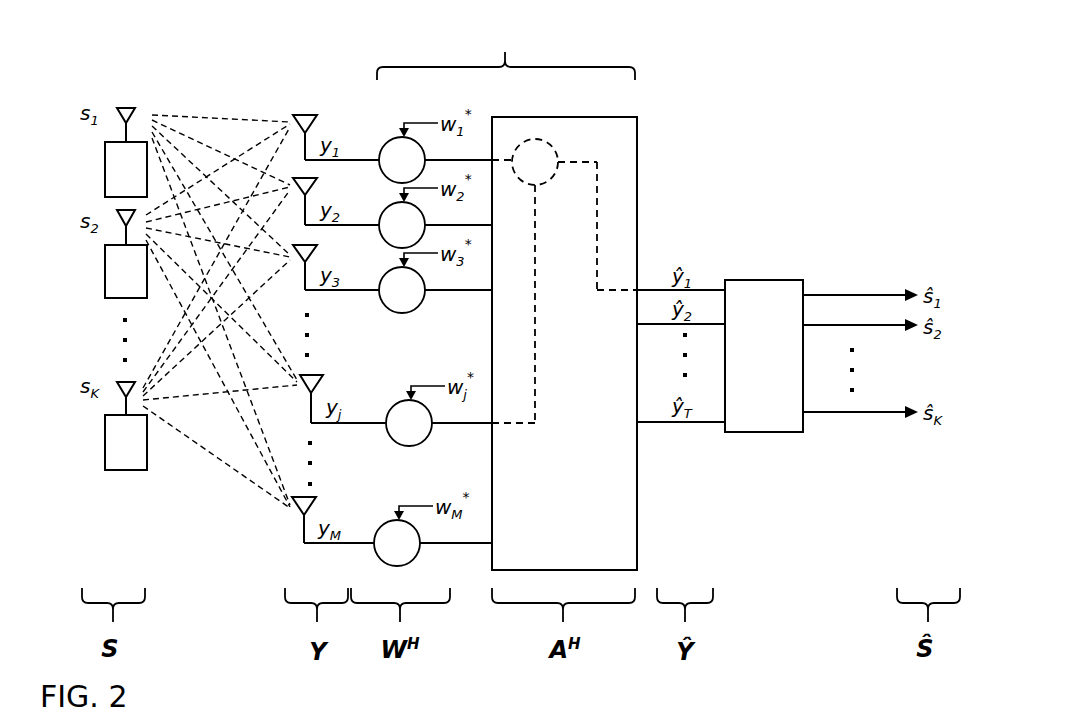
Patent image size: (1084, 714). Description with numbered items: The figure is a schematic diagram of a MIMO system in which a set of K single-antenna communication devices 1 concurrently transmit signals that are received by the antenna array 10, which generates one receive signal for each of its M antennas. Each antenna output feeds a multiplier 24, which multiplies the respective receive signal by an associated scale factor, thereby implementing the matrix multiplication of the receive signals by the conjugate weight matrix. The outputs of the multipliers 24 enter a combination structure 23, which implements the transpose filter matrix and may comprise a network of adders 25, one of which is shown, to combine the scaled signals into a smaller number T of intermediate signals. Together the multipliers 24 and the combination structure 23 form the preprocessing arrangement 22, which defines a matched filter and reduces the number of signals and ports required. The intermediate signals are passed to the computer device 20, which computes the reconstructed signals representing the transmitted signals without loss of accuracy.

The communication device 1 is at (126, 289).
The antenna array 10 is at (308, 88).
The computer device 20 is at (764, 356).
The preprocessing arrangement 22 is at (506, 45).
The combination structure 23 is at (564, 343).
The multiplier 24 is at (403, 351).
The adder 25 is at (564, 281).